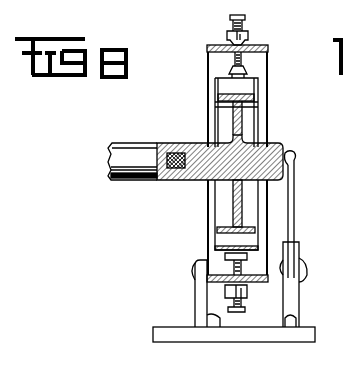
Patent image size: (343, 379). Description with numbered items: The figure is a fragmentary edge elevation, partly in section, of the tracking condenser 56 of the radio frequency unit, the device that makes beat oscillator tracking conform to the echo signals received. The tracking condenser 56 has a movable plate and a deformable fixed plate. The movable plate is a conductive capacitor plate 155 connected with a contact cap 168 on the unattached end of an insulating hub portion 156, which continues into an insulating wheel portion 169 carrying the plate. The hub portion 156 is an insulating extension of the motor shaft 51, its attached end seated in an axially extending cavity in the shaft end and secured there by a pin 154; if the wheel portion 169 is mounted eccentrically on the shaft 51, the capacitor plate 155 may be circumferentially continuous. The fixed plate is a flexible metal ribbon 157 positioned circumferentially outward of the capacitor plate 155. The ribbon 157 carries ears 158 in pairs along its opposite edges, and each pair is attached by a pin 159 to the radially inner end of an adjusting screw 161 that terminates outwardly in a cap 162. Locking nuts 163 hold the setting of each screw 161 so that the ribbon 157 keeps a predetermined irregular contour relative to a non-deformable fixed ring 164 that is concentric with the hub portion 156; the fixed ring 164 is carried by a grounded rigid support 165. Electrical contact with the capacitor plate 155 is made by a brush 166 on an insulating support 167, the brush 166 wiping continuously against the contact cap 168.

The motor shaft 51 is at (118, 155).
The tracking condenser 56 is at (172, 247).
The pin 154 is at (176, 180).
The conductive capacitor plate 155 is at (256, 96).
The hub portion 156 is at (207, 147).
The flexible metal ribbon 157 is at (218, 90).
The ears 158 is at (230, 70).
The pin 159 is at (246, 70).
The adjusting screw 161 is at (244, 18).
The cap 162 is at (230, 16).
The locking nuts 163 is at (249, 36).
The fixed ring 164 is at (207, 48).
The rigid support 165 is at (197, 302).
The brush 166 is at (295, 210).
The insulating support 167 is at (296, 305).
The contact cap 168 is at (286, 152).
The wheel portion 169 is at (233, 212).